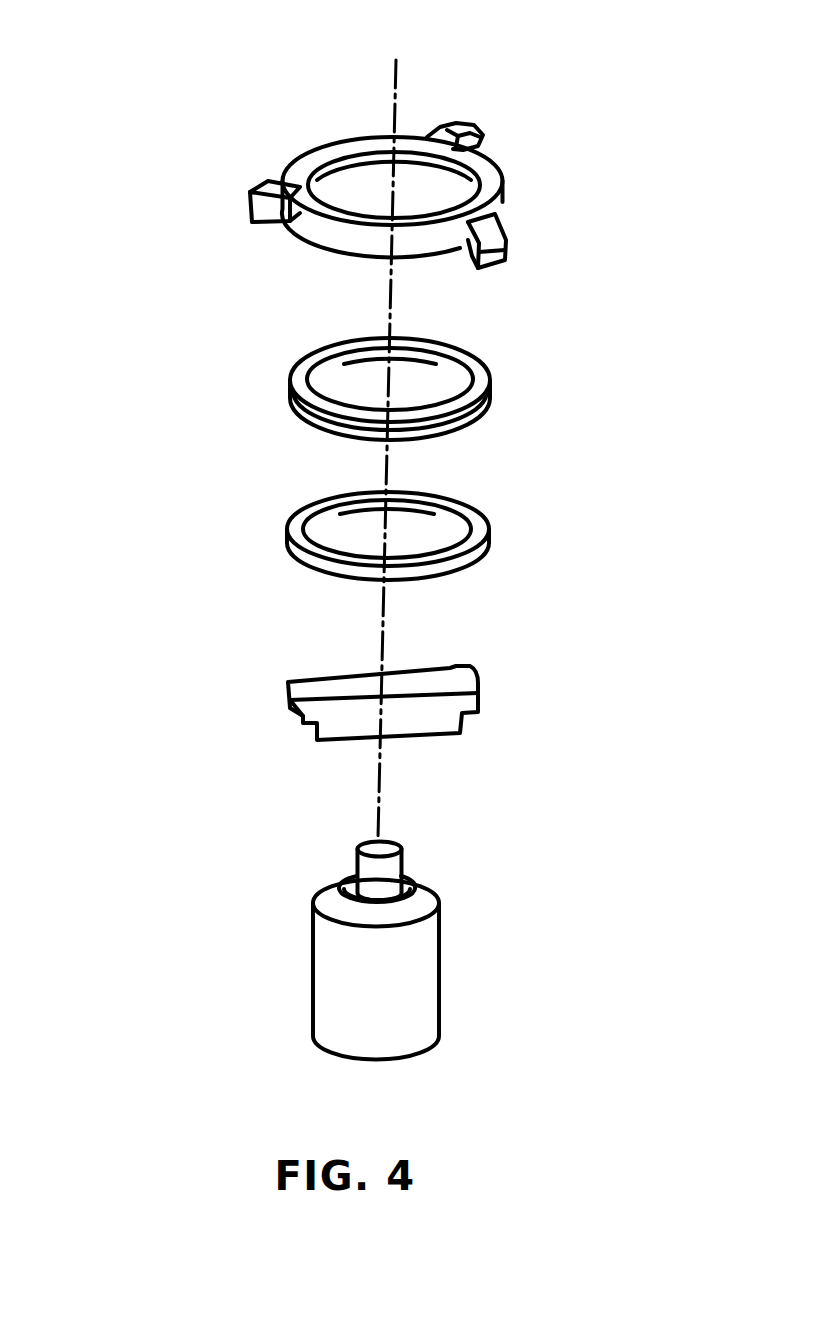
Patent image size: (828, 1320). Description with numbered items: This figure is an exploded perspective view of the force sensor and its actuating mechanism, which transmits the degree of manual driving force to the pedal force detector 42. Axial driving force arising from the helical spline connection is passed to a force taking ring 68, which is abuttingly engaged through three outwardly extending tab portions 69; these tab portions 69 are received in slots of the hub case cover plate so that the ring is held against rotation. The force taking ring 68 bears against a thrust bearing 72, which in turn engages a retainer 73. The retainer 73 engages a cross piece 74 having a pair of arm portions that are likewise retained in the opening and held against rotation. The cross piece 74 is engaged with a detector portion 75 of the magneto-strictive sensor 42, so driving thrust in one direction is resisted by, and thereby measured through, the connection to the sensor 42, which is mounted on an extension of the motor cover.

The force taking ring 68 is at (320, 140).
The tab portions 69 is at (250, 203).
The thrust bearing 72 is at (288, 362).
The retainer 73 is at (287, 517).
The cross piece 74 is at (317, 677).
The detector portion 75 is at (353, 864).
The pedal force detector 42 is at (310, 983).